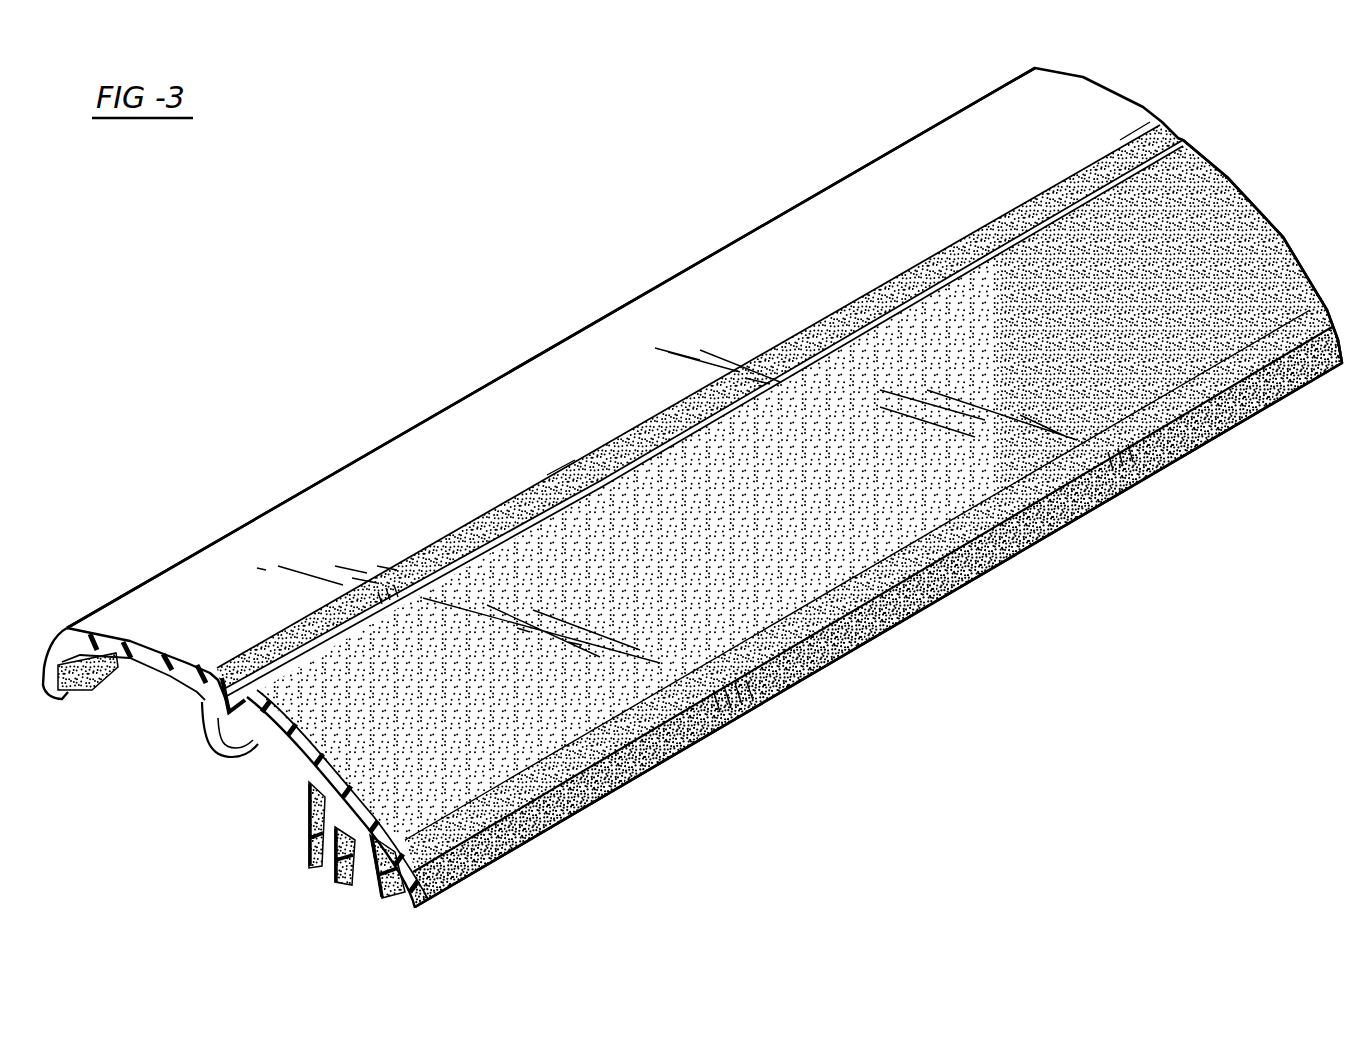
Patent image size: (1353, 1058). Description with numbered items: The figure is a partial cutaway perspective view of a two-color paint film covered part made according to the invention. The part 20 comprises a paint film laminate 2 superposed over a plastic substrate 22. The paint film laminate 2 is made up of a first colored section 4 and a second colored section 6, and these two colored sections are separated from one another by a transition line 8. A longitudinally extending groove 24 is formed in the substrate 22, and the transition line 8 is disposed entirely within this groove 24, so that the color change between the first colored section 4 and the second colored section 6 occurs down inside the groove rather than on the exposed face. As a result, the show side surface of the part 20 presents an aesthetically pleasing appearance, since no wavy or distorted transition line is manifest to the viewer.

The paint film laminate 2 is at (1258, 178).
The first colored section 4 is at (432, 353).
The second colored section 6 is at (1290, 253).
The transition line 8 is at (1185, 134).
The part 20 is at (628, 214).
The plastic substrate 22 is at (130, 663).
The longitudinally extending groove 24 is at (205, 738).